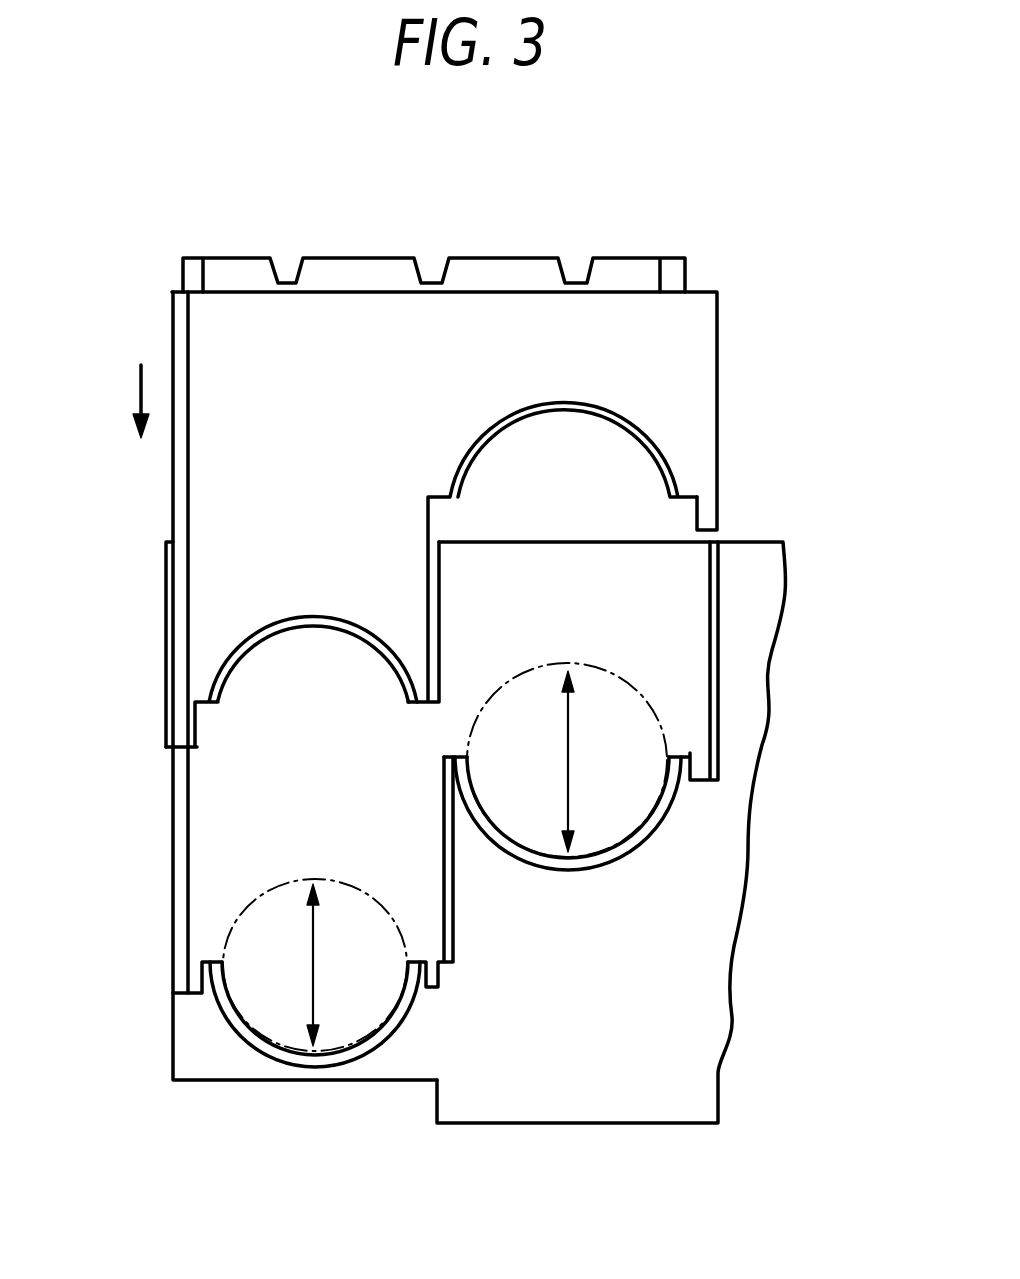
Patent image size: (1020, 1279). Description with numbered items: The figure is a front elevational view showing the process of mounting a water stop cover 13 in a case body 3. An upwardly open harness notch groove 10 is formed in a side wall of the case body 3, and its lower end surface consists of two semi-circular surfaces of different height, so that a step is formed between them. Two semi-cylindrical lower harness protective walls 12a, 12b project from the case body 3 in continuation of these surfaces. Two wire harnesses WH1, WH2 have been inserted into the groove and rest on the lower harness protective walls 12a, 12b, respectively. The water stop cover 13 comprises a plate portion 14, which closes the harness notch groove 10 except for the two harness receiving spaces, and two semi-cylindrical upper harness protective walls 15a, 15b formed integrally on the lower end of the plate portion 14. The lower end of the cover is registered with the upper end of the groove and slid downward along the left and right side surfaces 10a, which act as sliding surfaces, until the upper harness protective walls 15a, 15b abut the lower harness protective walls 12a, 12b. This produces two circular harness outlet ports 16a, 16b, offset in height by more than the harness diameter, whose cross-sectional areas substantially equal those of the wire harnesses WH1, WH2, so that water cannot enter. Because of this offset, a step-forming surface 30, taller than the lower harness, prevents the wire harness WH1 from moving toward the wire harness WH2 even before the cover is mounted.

The case body 3 is at (672, 1062).
The harness notch groove 10 is at (190, 848).
The side surfaces 10a is at (183, 775).
The lower harness protective wall 12a is at (272, 1052).
The lower harness protective wall 12b is at (592, 866).
The water stop cover 13 is at (512, 243).
The plate portion 14 is at (670, 338).
The upper harness protective wall 15a is at (315, 617).
The upper harness protective wall 15b is at (607, 407).
The harness outlet port 16a is at (397, 990).
The harness outlet port 16b is at (606, 838).
The step-forming surface 30 is at (444, 878).
The wire harness WH1 is at (223, 937).
The wire harness WH2 is at (655, 707).